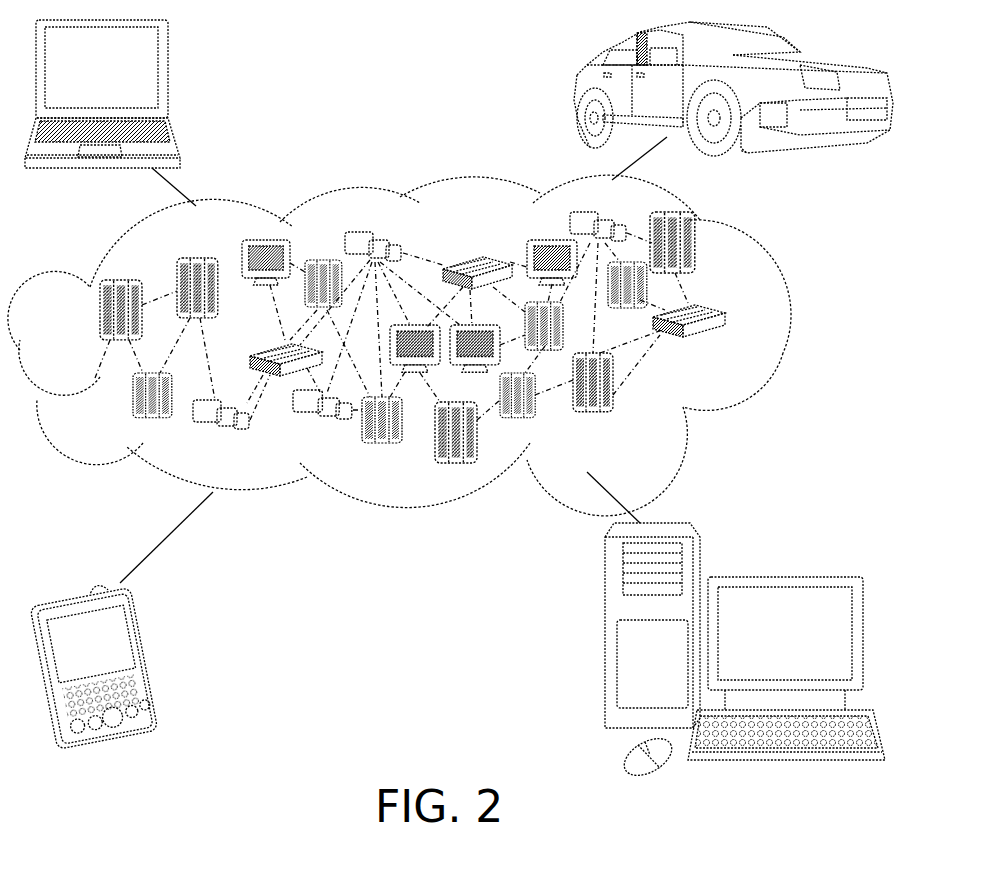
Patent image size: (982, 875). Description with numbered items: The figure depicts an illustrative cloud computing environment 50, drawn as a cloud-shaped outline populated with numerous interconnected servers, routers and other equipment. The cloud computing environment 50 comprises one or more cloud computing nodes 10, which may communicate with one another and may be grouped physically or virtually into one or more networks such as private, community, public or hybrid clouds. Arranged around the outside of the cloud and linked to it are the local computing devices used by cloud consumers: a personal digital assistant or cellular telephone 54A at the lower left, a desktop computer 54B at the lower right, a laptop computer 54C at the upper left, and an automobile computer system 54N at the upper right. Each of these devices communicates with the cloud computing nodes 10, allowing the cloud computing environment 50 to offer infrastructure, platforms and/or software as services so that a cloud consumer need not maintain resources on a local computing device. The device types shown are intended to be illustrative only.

The cloud computing node 10 is at (730, 344).
The cloud computing environment 50 is at (422, 345).
The personal digital assistant or cellular telephone 54A is at (152, 658).
The desktop computer 54B is at (800, 558).
The laptop computer 54C is at (168, 78).
The automobile computer system 54N is at (580, 92).